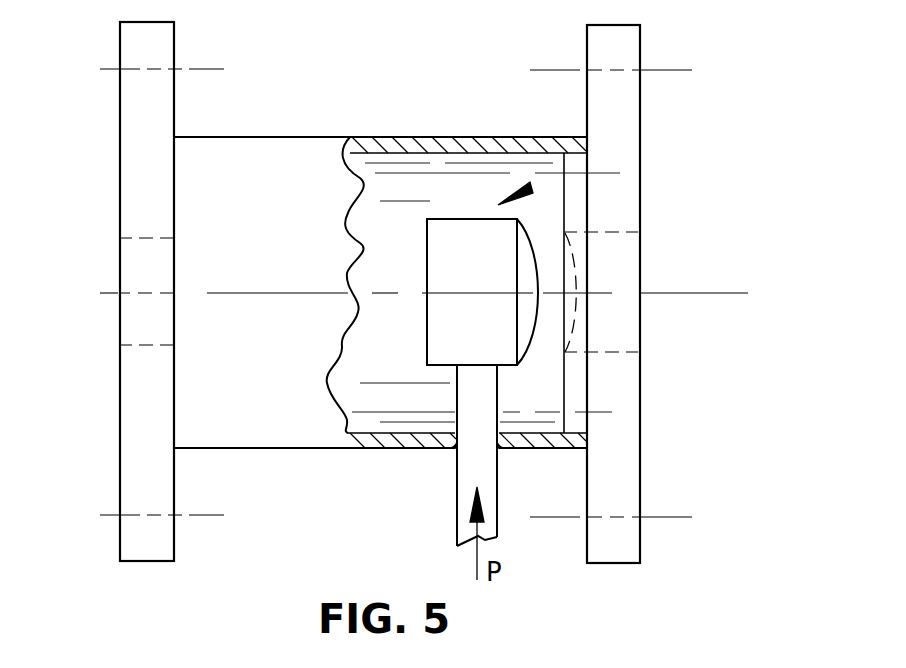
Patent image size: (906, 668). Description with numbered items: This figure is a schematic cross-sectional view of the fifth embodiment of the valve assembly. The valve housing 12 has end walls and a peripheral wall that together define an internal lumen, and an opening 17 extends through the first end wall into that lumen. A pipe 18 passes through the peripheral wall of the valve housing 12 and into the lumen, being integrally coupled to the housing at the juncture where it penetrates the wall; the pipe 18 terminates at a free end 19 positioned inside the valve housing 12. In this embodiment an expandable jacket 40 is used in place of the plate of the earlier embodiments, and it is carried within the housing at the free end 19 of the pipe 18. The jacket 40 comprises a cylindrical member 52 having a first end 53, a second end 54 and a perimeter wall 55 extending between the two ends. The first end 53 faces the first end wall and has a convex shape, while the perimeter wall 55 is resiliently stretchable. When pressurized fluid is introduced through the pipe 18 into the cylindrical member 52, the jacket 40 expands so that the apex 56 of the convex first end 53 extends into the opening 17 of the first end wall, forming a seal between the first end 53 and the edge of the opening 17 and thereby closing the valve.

The valve housing 12 is at (176, 136).
The opening 17 is at (612, 352).
The pipe 18 is at (468, 467).
The free end 19 is at (480, 360).
The expandable jacket 40 is at (452, 224).
The cylindrical member 52 is at (528, 189).
The first end 53 is at (537, 268).
The second end 54 is at (427, 333).
The perimeter wall 55 is at (473, 220).
The apex 56 is at (538, 285).